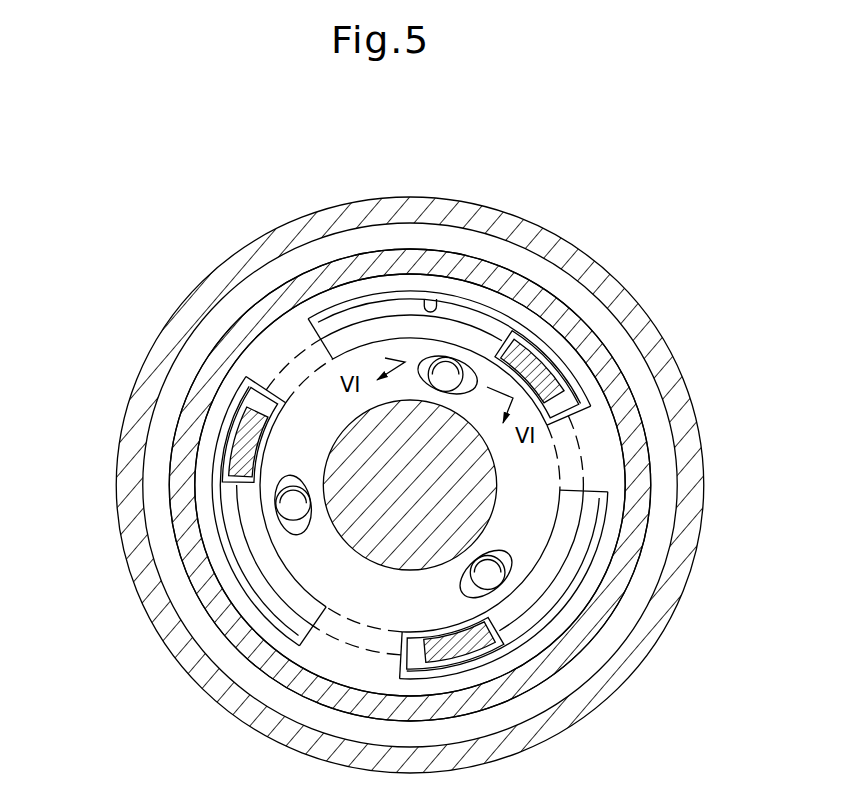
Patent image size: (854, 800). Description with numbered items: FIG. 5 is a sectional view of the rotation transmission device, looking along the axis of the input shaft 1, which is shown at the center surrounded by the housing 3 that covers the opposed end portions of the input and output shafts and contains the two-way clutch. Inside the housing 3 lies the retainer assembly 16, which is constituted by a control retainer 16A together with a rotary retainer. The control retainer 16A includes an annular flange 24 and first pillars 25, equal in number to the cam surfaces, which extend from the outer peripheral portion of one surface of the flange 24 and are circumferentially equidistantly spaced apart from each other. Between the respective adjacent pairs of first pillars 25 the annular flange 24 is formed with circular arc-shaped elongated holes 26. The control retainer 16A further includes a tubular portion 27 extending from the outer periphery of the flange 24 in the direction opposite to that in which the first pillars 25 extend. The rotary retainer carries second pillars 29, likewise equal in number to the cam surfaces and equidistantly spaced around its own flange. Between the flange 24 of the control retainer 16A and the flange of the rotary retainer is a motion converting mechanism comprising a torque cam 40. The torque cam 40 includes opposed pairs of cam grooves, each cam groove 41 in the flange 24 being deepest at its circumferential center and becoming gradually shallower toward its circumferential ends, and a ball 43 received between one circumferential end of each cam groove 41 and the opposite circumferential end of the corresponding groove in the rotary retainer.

The input shaft 1 is at (480, 465).
The housing 3 is at (200, 305).
The retainer assembly 16 is at (313, 266).
The control retainer 16A is at (360, 247).
The annular flange 24 is at (305, 568).
The first pillars 25 is at (298, 353).
The elongated holes 26 is at (432, 294).
The tubular portion 27 is at (213, 367).
The second pillars 29 is at (235, 440).
The torque cam 40 is at (283, 514).
The cam groove 41 is at (556, 340).
The ball 43 is at (452, 357).